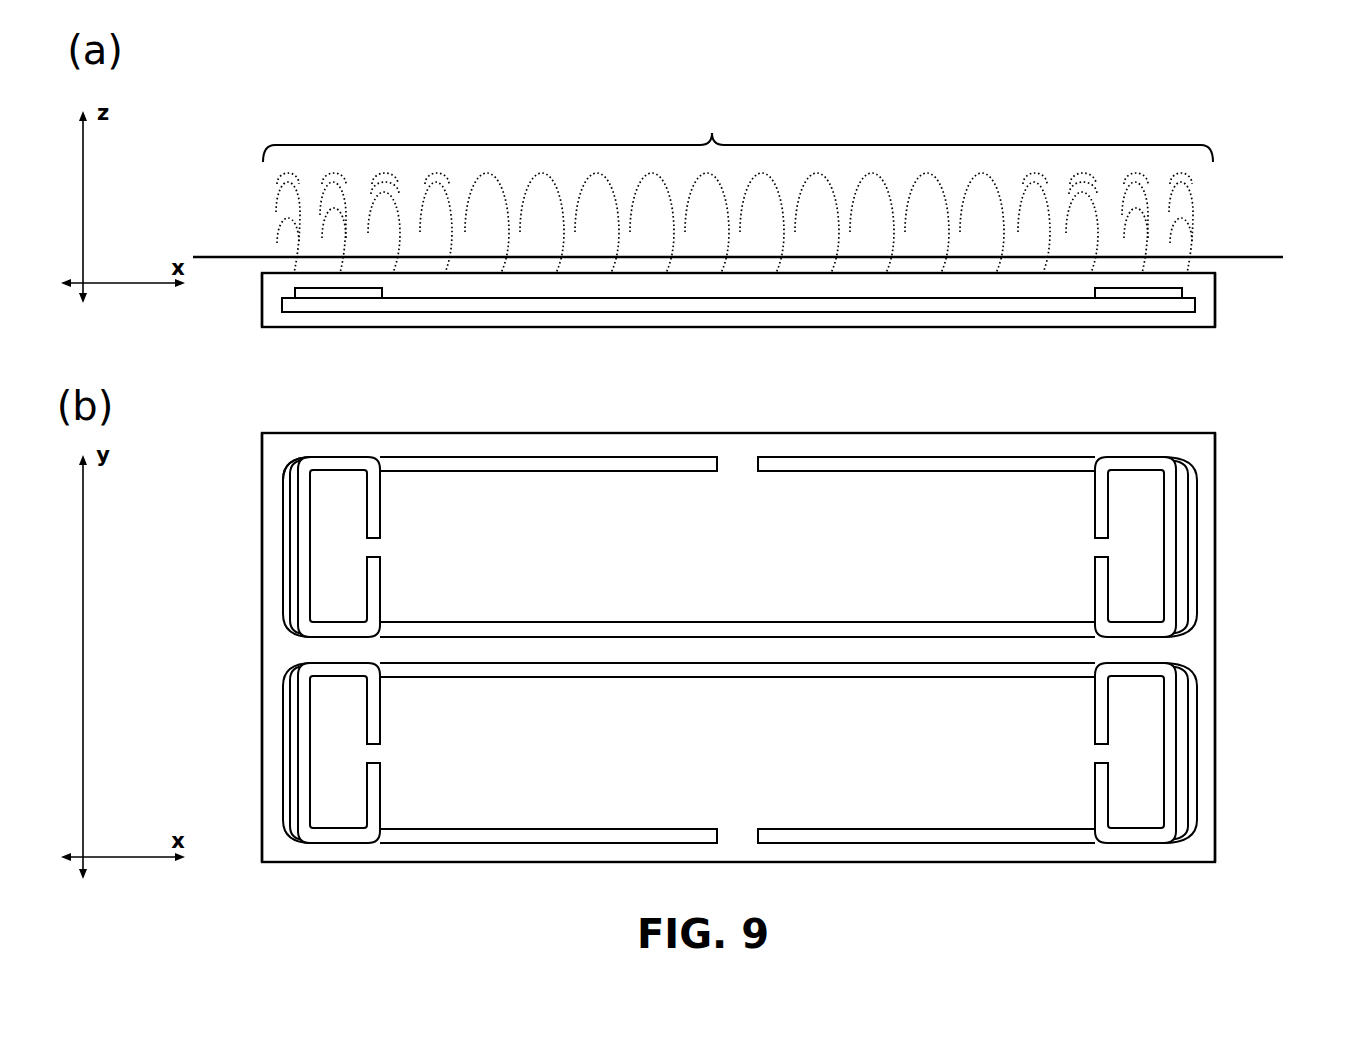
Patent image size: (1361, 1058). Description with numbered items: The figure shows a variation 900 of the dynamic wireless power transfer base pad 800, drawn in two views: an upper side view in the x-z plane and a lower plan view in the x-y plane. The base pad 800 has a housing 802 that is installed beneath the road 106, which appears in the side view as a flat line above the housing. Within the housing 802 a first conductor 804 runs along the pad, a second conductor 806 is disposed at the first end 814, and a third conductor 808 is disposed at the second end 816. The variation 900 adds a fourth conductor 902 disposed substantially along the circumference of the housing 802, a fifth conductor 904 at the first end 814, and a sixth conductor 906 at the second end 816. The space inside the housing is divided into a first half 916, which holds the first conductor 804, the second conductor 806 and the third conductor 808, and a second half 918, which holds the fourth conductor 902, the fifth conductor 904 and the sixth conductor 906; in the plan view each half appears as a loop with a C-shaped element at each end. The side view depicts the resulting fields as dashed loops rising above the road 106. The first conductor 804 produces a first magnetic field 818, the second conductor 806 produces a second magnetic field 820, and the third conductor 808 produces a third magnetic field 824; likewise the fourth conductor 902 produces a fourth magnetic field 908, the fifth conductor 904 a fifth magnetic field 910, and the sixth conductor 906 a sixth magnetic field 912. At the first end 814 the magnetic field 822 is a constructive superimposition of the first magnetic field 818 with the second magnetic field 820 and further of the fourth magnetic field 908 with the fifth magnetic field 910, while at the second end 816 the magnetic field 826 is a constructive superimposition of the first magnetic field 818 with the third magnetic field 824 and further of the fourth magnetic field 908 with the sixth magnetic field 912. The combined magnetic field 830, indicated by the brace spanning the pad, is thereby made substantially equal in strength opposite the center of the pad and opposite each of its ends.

The DWPT base pad 800 is at (143, 100).
The variation 900 is at (734, 498).
The magnetic field 830 is at (738, 189).
The magnetic field at the first end 822 is at (258, 173).
The second magnetic field 820 is at (257, 200).
The fifth magnetic field 910 is at (288, 227).
The magnetic field at the second end 826 is at (1208, 177).
The third magnetic field 824 is at (1211, 206).
The sixth magnetic field 912 is at (1180, 227).
The first magnetic field 818 is at (1211, 246).
The fourth magnetic field 908 is at (1234, 229).
The road 106 is at (1255, 259).
The housing 802 is at (1210, 318).
The first end 814 is at (270, 318).
The second end 816 is at (1202, 323).
The second conductor 806 is at (332, 293).
The fifth conductor 904 is at (389, 565).
The third conductor 808 is at (1130, 293).
The sixth conductor 906 is at (1085, 565).
The first conductor 804 is at (782, 303).
The fourth conductor 902 is at (739, 570).
The first half 916 is at (722, 545).
The second half 918 is at (722, 760).